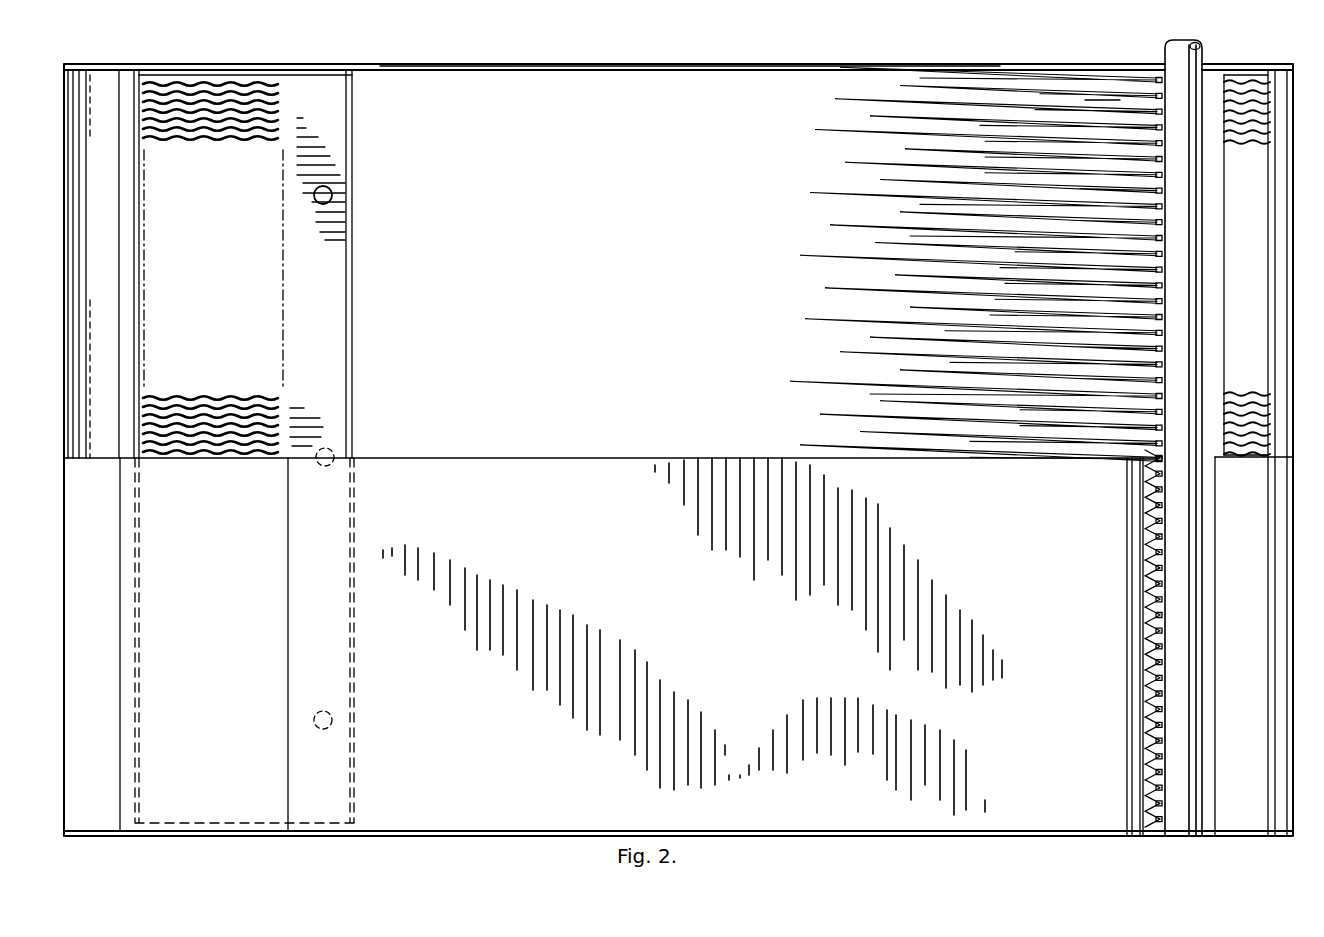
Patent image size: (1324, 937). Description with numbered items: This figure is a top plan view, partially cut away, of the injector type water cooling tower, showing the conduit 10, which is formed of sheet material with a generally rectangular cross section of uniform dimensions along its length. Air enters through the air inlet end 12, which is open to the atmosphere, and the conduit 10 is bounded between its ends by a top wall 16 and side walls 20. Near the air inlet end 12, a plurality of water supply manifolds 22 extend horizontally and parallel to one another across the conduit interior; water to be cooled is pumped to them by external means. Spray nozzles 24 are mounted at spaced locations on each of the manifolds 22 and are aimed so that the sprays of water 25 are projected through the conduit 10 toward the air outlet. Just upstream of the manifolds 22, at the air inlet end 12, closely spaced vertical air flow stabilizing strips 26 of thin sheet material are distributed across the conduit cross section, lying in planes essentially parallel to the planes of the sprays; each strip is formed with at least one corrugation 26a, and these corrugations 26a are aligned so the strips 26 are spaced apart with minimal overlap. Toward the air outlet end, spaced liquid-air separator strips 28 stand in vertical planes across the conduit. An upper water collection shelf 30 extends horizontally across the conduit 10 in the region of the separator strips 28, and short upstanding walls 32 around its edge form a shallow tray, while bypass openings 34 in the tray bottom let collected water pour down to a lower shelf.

The conduit 10 is at (600, 55).
The air inlet end 12 is at (1295, 95).
The top wall 16 is at (512, 468).
The side walls 20 is at (678, 65).
The water supply manifolds 22 is at (1198, 46).
The spray nozzles 24 is at (1157, 112).
The sprays of water 25 is at (1100, 118).
The air flow stabilizing strips 26 is at (1271, 145).
The corrugation 26a is at (1260, 95).
The liquid-air separator strips 28 is at (225, 98).
The upper water collection shelf 30 is at (312, 88).
The upstanding walls 32 is at (355, 296).
The bypass openings 34 is at (333, 194).